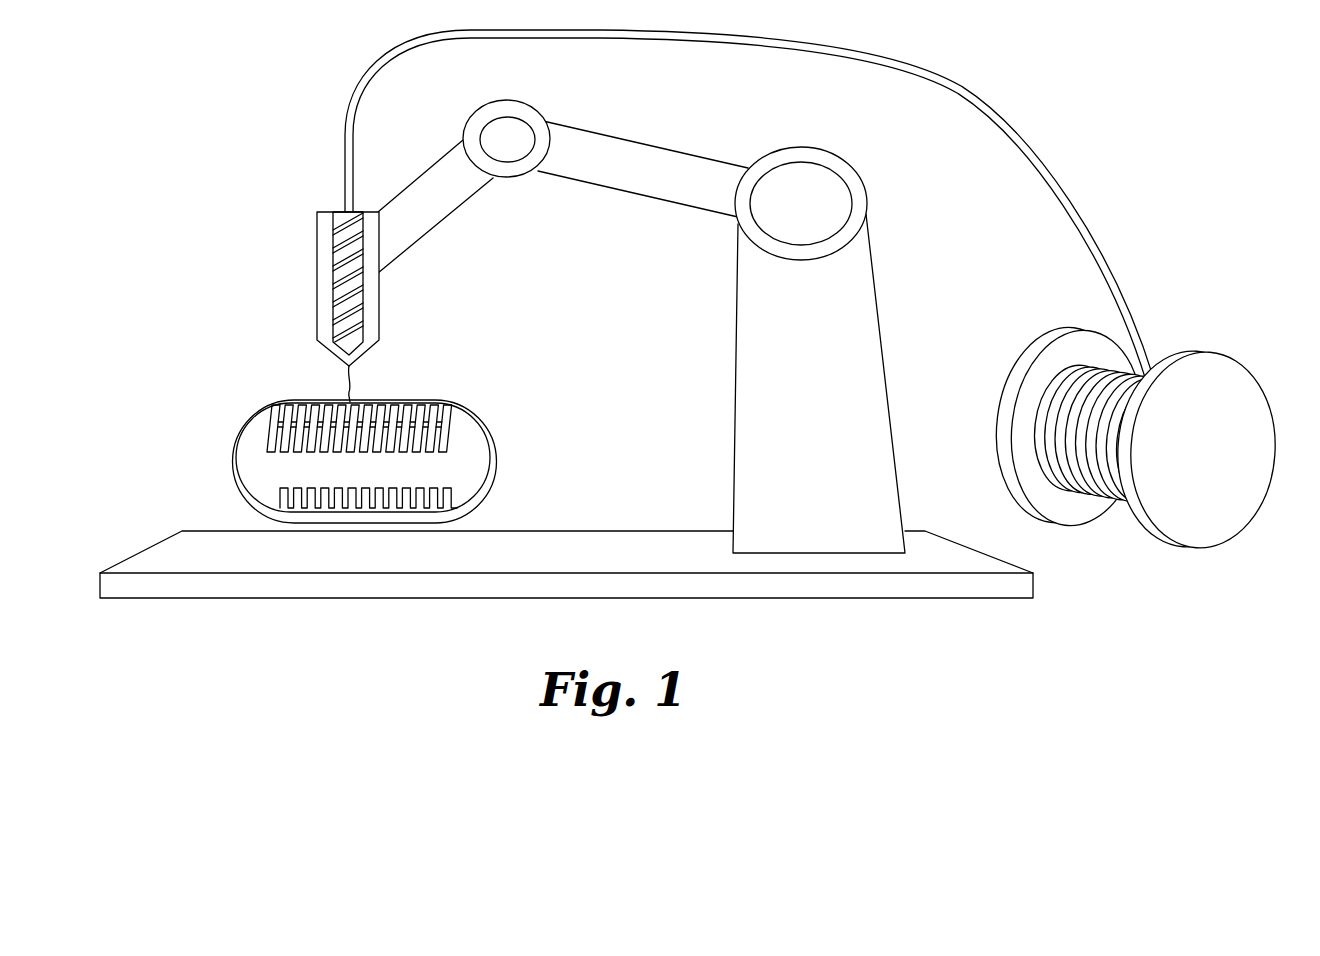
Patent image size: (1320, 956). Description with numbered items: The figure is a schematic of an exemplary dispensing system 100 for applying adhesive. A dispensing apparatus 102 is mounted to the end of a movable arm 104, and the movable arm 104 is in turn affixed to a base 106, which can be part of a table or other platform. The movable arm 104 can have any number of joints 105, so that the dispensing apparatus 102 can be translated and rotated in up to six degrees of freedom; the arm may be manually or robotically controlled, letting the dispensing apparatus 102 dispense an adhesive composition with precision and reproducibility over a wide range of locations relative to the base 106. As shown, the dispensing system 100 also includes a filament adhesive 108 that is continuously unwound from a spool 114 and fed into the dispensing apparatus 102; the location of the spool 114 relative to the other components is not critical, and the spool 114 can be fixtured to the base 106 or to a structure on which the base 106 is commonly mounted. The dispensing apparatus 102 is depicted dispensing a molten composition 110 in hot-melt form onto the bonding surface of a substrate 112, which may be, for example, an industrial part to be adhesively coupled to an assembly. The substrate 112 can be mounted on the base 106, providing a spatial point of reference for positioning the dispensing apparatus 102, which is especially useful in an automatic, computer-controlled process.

The dispensing system 100 is at (1143, 87).
The dispensing apparatus 102 is at (317, 258).
The movable arm 104 is at (660, 161).
The joints 105 is at (508, 146).
The base 106 is at (403, 587).
The filament adhesive 108 is at (372, 76).
The molten composition 110 is at (347, 371).
The substrate 112 is at (487, 427).
The spool 114 is at (1265, 388).